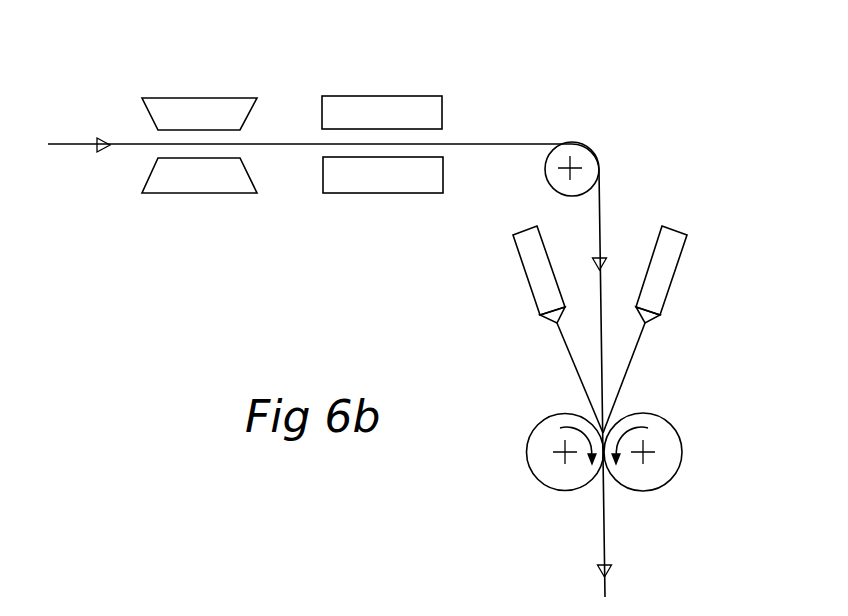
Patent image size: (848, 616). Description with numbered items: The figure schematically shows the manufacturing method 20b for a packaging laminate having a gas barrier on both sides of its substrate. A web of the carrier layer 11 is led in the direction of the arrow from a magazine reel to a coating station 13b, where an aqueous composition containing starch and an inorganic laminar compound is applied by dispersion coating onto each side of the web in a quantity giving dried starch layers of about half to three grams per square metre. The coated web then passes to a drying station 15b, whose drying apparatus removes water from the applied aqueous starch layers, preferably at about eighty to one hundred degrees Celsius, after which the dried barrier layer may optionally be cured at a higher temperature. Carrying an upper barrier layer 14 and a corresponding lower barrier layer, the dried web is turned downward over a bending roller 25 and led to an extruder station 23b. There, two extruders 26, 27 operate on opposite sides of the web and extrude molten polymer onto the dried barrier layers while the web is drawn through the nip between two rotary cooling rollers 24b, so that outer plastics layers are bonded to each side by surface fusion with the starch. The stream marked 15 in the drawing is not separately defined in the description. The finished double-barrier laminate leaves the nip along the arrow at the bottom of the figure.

The carrier layer 11 is at (73, 145).
The coating station 13b is at (202, 97).
The drying station 15b is at (388, 95).
The bending roller 25 is at (580, 150).
The method of manufacturing the packaging laminate 20b is at (740, 119).
The extruder 27 is at (528, 270).
The extruder 26 is at (682, 243).
The second material stream 15 is at (557, 378).
The barrier layer 14 is at (646, 378).
The extruder station 23b is at (737, 309).
The rotary cooling rollers 24b is at (678, 458).